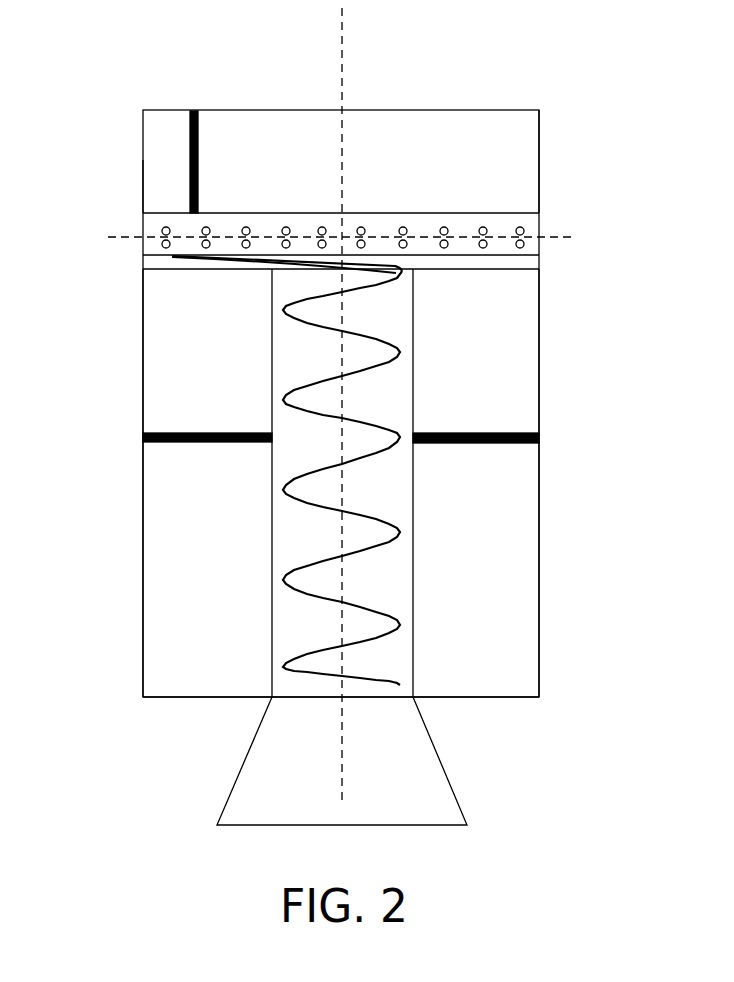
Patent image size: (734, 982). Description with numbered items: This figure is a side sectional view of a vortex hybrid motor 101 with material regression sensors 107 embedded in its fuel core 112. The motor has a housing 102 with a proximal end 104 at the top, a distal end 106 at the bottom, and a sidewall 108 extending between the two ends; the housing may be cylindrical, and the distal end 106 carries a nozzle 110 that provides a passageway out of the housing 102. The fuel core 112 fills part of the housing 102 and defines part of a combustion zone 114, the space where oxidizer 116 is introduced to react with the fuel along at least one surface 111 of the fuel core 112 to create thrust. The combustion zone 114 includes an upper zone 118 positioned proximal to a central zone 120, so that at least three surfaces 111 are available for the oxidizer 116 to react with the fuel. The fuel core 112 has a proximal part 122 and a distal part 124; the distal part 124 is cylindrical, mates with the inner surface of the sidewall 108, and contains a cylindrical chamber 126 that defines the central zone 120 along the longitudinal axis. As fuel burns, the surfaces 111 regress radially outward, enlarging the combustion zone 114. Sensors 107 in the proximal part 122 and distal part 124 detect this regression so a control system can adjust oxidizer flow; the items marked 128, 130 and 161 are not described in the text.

The vortex hybrid motor 101 is at (628, 138).
The housing 102 is at (143, 186).
The proximal end 104 is at (118, 102).
The distal end 106 is at (133, 707).
The material regression sensors 107 is at (200, 125).
The sidewall 108 is at (143, 413).
The nozzle 110 is at (447, 777).
The surface 111 is at (273, 210).
The fuel core 112 is at (518, 381).
The combustion zone 114 is at (297, 453).
The oxidizer 116 is at (507, 250).
The upper zone 118 is at (539, 221).
The central zone 120 is at (400, 483).
The proximal part 122 is at (520, 122).
The distal part 124 is at (522, 659).
The cylindrical chamber 126 is at (393, 590).
The mixing plate 128 is at (143, 226).
The perforated plate 130 is at (403, 213).
The flow 161 is at (372, 420).